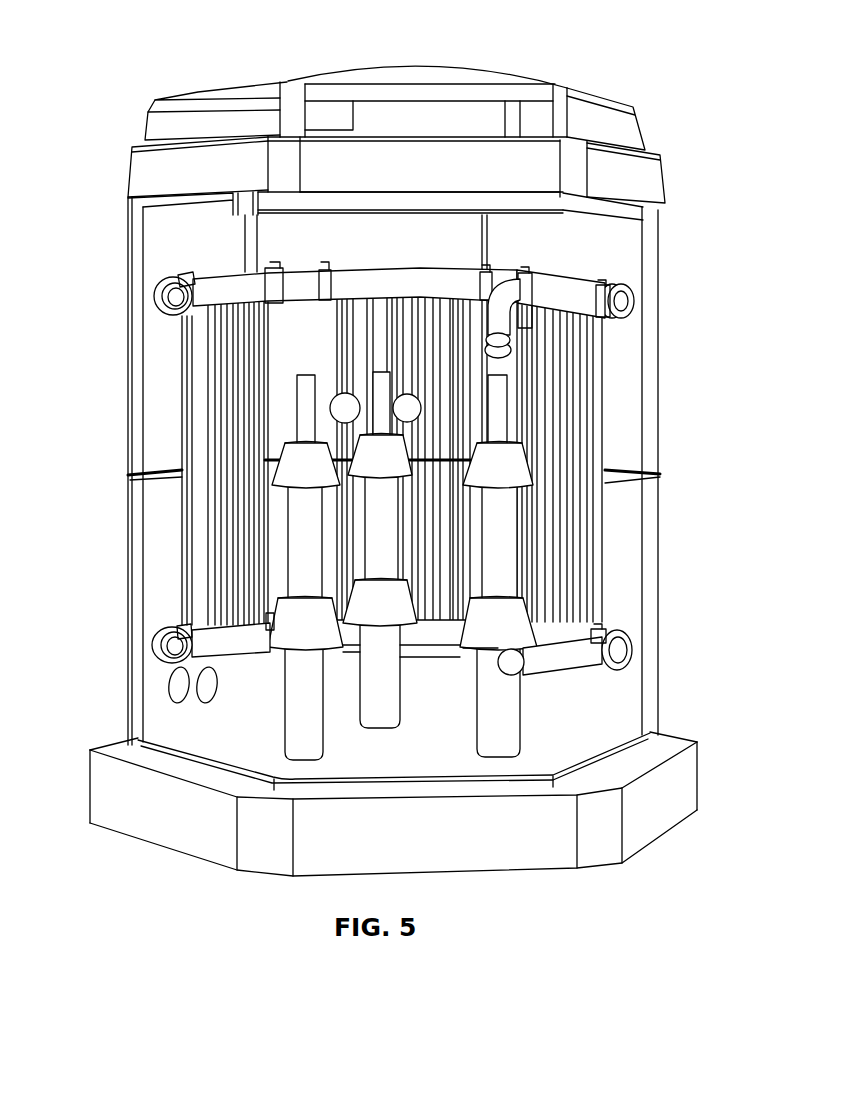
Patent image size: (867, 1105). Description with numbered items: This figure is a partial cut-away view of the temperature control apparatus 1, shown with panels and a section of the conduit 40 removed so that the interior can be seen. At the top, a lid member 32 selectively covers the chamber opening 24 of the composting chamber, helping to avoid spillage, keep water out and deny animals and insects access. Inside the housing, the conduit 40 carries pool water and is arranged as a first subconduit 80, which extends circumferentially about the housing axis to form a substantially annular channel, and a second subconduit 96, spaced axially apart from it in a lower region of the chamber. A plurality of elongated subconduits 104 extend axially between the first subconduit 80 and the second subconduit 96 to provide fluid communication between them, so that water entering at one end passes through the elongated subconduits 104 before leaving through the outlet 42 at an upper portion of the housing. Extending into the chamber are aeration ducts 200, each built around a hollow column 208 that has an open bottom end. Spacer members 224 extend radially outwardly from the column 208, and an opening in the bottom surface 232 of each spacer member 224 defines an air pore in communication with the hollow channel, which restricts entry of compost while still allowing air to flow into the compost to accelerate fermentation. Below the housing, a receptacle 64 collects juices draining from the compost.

The temperature control apparatus 1 is at (98, 40).
The chamber opening 24 is at (615, 100).
The lid member 32 is at (440, 67).
The conduit 40 is at (627, 292).
The outlet 42 is at (498, 353).
The receptacle 64 is at (697, 767).
The first subconduit 80 is at (568, 287).
The second subconduit 96 is at (593, 653).
The elongated subconduits 104 is at (187, 348).
The aeration duct 200 is at (300, 588).
The hollow column 208 is at (303, 425).
The spacer member 224 is at (297, 482).
The bottom surface 232 is at (520, 490).